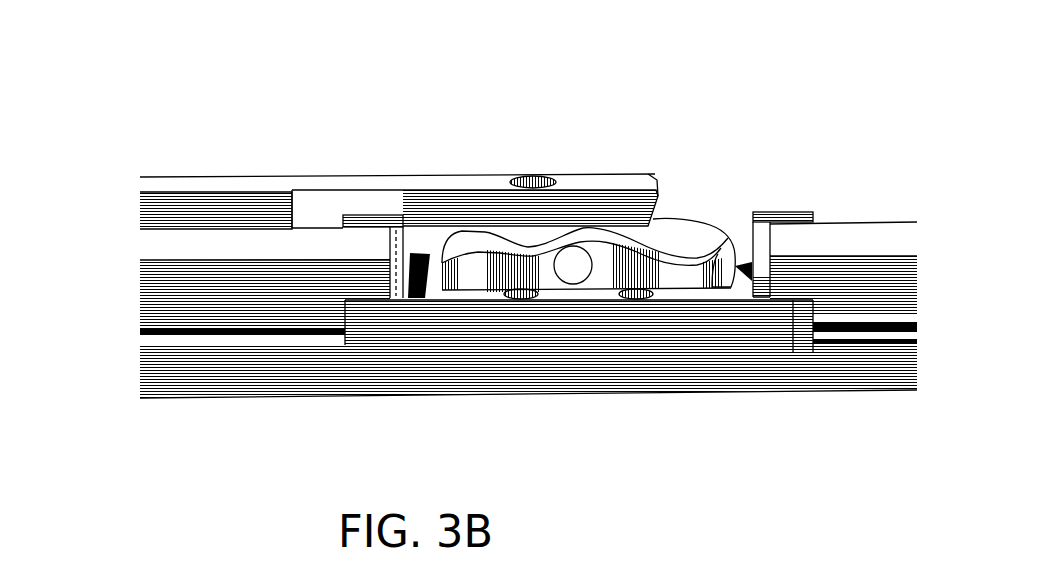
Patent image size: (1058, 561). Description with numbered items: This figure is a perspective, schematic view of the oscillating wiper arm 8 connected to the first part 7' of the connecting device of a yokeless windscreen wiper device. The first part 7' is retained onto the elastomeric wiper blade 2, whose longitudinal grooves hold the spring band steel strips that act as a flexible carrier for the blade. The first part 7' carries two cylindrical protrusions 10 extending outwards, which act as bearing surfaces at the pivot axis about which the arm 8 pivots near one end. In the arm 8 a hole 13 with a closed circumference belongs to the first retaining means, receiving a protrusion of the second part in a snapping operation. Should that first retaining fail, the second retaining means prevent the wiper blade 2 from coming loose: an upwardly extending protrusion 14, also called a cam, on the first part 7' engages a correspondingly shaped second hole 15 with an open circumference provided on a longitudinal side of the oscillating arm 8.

The wiper blade 2 is at (683, 387).
The first part 7' is at (616, 196).
The oscillating wiper arm 8 is at (228, 195).
The cylindrical protrusions 10 is at (580, 272).
The hole 13 is at (540, 183).
The upwardly extending protrusion 14 is at (383, 217).
The second hole 15 is at (311, 198).